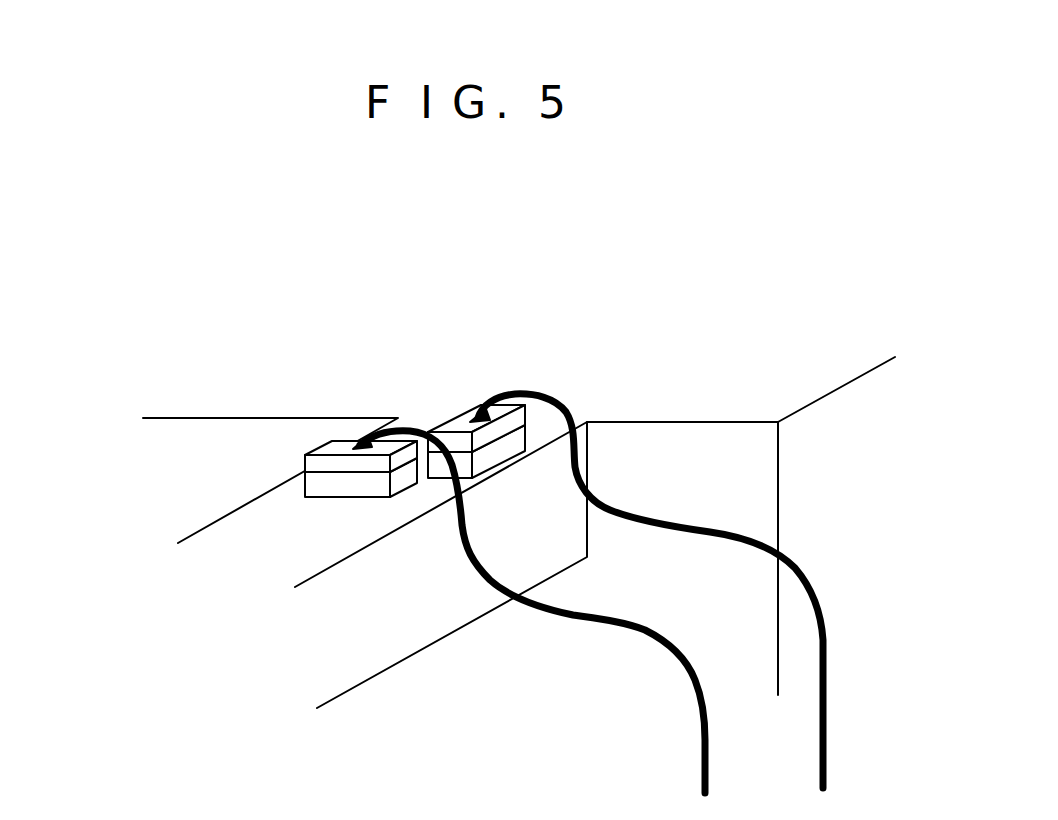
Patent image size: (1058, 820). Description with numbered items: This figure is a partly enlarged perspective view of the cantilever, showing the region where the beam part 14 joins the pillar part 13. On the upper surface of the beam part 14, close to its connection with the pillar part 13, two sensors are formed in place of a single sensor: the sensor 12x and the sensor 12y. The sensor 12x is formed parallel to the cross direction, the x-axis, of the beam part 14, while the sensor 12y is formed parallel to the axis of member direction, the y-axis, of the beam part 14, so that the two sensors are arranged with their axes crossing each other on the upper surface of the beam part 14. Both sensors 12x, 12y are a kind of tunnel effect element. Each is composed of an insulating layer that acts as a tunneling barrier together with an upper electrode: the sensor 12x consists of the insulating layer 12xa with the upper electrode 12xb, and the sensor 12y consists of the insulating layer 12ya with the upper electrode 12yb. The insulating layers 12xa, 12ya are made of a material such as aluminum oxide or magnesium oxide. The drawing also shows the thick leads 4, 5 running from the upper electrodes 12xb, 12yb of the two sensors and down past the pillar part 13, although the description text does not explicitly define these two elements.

The cable 4 is at (657, 643).
The cable 5 is at (803, 570).
The sensor 12x is at (244, 422).
The insulating layer 12xa is at (333, 483).
The upper electrode 12xb is at (300, 445).
The sensor 12y is at (566, 434).
The insulating layer 12ya is at (497, 450).
The upper electrode 12yb is at (466, 425).
The pillar part 13 is at (775, 392).
The beam part 14 is at (220, 537).